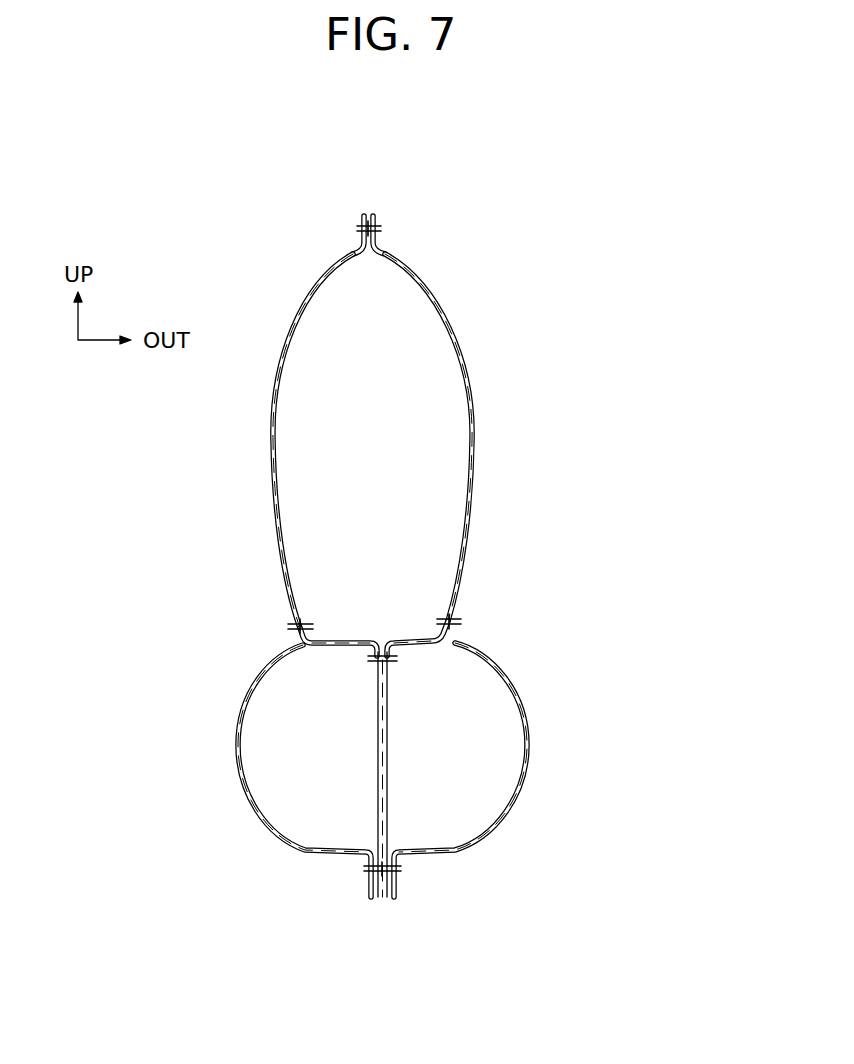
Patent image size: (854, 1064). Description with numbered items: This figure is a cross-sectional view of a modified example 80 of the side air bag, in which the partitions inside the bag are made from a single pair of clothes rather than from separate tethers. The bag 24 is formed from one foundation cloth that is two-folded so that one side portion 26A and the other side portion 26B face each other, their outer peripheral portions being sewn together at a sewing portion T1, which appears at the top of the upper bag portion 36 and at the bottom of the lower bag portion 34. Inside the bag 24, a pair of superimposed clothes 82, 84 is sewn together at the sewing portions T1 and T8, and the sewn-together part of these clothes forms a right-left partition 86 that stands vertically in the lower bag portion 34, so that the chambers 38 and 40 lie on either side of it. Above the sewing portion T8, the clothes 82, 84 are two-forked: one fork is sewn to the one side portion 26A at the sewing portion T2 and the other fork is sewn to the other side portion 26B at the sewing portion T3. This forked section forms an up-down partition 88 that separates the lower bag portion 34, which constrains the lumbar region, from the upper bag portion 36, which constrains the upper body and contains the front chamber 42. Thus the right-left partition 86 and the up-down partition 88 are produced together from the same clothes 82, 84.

The modified example 80 is at (504, 352).
The front chamber 42 is at (394, 459).
The bag 24 is at (273, 537).
The other side portion 26B is at (272, 441).
The one side portion 26A is at (476, 431).
The upper bag portion 36 is at (477, 521).
The up-down partition 88 is at (356, 639).
The lower bag portion 34 is at (530, 743).
The left lower chamber 40 is at (339, 761).
The right lower chamber 38 is at (449, 761).
The right-left partition 86 is at (390, 774).
The cloth 84 is at (377, 783).
The cloth 82 is at (390, 805).
The sewing portion T1 is at (380, 226).
The sewing portion T2 is at (462, 620).
The sewing portion T3 is at (288, 625).
The sewing portion T8 is at (394, 660).